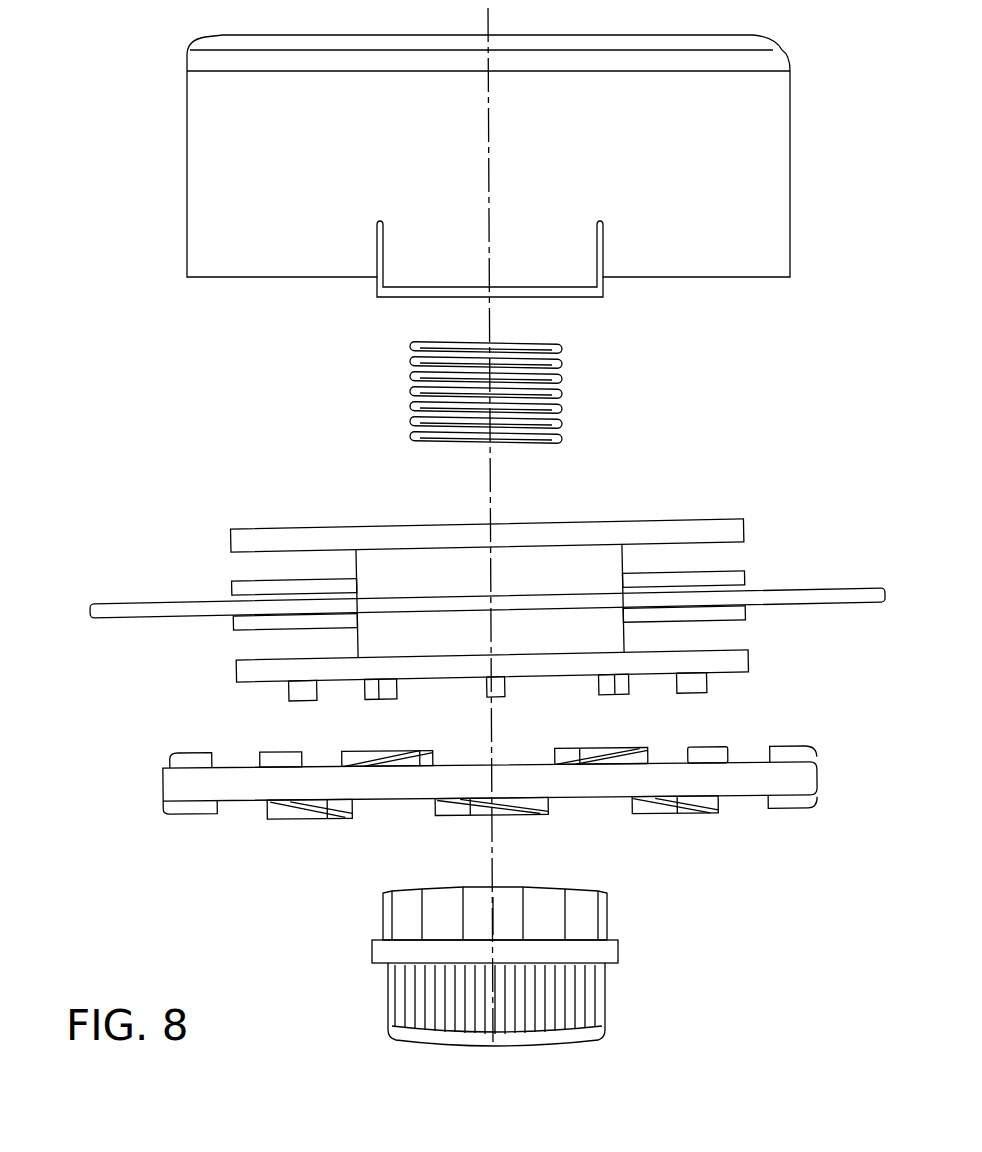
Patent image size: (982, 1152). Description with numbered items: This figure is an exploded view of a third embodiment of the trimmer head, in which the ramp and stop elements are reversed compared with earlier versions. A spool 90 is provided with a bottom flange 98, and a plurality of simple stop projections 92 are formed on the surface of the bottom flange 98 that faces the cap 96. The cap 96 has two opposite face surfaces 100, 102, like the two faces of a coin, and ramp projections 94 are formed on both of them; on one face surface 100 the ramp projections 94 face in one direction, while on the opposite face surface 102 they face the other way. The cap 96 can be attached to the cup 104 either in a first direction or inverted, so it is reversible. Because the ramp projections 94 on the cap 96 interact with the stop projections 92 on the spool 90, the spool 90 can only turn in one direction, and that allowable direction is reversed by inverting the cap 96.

The spool 90 is at (488, 589).
The stop projections 92 is at (292, 697).
The ramp projections 94 is at (637, 742).
The cap 96 is at (452, 784).
The bottom flange 98 is at (235, 672).
The face surface 100 is at (230, 765).
The opposite face surface 102 is at (237, 805).
The cup 104 is at (183, 231).